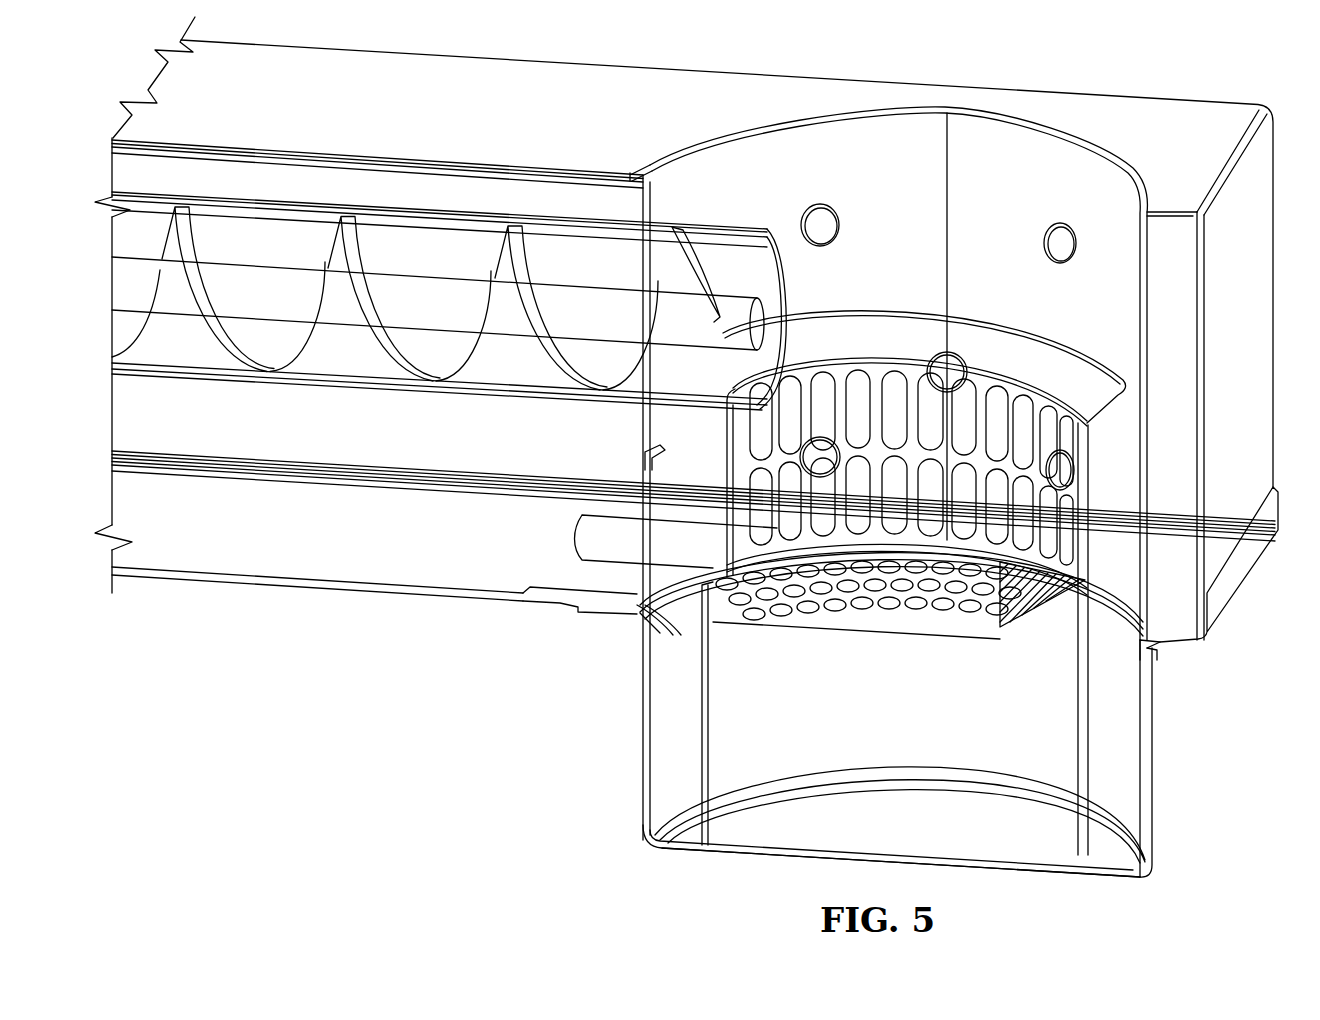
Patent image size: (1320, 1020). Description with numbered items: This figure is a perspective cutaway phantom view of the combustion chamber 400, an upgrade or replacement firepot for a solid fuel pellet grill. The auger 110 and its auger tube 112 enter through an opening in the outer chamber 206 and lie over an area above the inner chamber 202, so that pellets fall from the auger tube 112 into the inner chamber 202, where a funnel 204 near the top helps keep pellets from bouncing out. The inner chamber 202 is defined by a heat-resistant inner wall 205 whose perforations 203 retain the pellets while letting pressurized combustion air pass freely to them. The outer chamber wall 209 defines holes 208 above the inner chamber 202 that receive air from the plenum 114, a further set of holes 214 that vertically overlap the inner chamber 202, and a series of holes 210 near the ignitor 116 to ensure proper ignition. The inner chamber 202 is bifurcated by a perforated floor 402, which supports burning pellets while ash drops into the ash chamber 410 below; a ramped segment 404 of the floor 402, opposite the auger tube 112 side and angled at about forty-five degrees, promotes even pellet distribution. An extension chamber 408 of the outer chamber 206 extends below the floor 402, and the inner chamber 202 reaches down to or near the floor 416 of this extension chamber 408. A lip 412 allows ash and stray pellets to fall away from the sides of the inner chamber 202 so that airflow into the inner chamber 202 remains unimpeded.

The auger 110 is at (290, 343).
The auger tube 112 is at (197, 378).
The plenum 114 is at (1203, 117).
The ignitor 116 is at (580, 538).
The inner chamber 202 is at (857, 392).
The perforations 203 is at (882, 382).
The funnel 204 is at (977, 323).
The inner wall 205 is at (1097, 453).
The outer chamber 206 is at (1073, 327).
The holes 208 is at (835, 212).
The outer chamber wall 209 is at (1122, 187).
The holes 210 is at (643, 467).
The holes 214 is at (965, 355).
The combustion chamber 400 is at (652, 142).
The floor 402 is at (823, 627).
The ramped segment 404 is at (1012, 628).
The extension chamber 408 is at (1110, 793).
The ash chamber 410 is at (940, 757).
The lip 412 is at (1147, 653).
The floor 416 is at (800, 840).